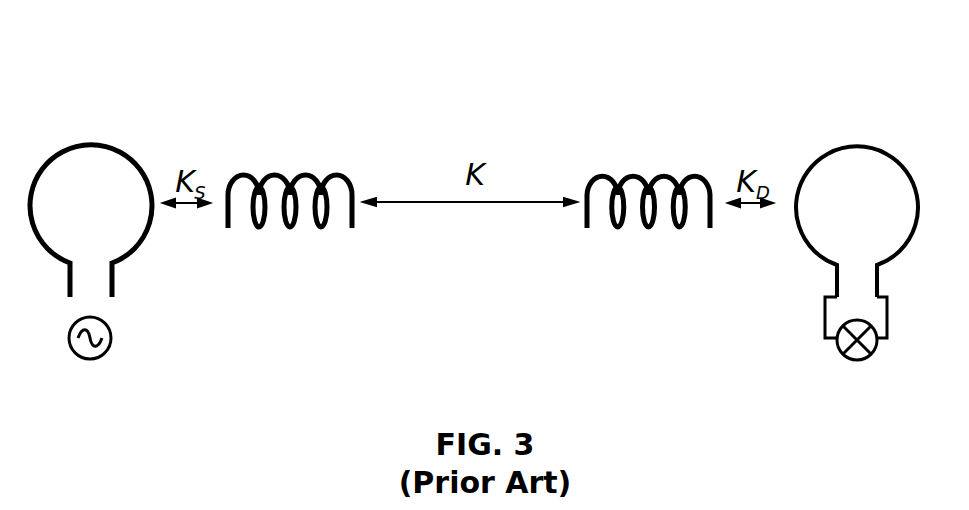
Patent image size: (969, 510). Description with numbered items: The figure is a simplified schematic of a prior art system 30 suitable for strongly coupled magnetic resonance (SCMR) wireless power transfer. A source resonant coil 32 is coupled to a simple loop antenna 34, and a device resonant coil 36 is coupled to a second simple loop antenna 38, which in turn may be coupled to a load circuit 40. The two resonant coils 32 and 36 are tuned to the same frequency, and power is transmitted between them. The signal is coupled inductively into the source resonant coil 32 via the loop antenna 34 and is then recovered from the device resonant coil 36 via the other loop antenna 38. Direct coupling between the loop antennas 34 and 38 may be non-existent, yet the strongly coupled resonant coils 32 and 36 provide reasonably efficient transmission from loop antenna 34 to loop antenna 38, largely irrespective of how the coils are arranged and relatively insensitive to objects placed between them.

The system 30 is at (614, 97).
The source resonant coil 32 is at (303, 175).
The simple loop antenna 34 is at (103, 147).
The device resonant coil 36 is at (642, 227).
The simple loop antenna 38 is at (818, 158).
The load circuit 40 is at (837, 347).